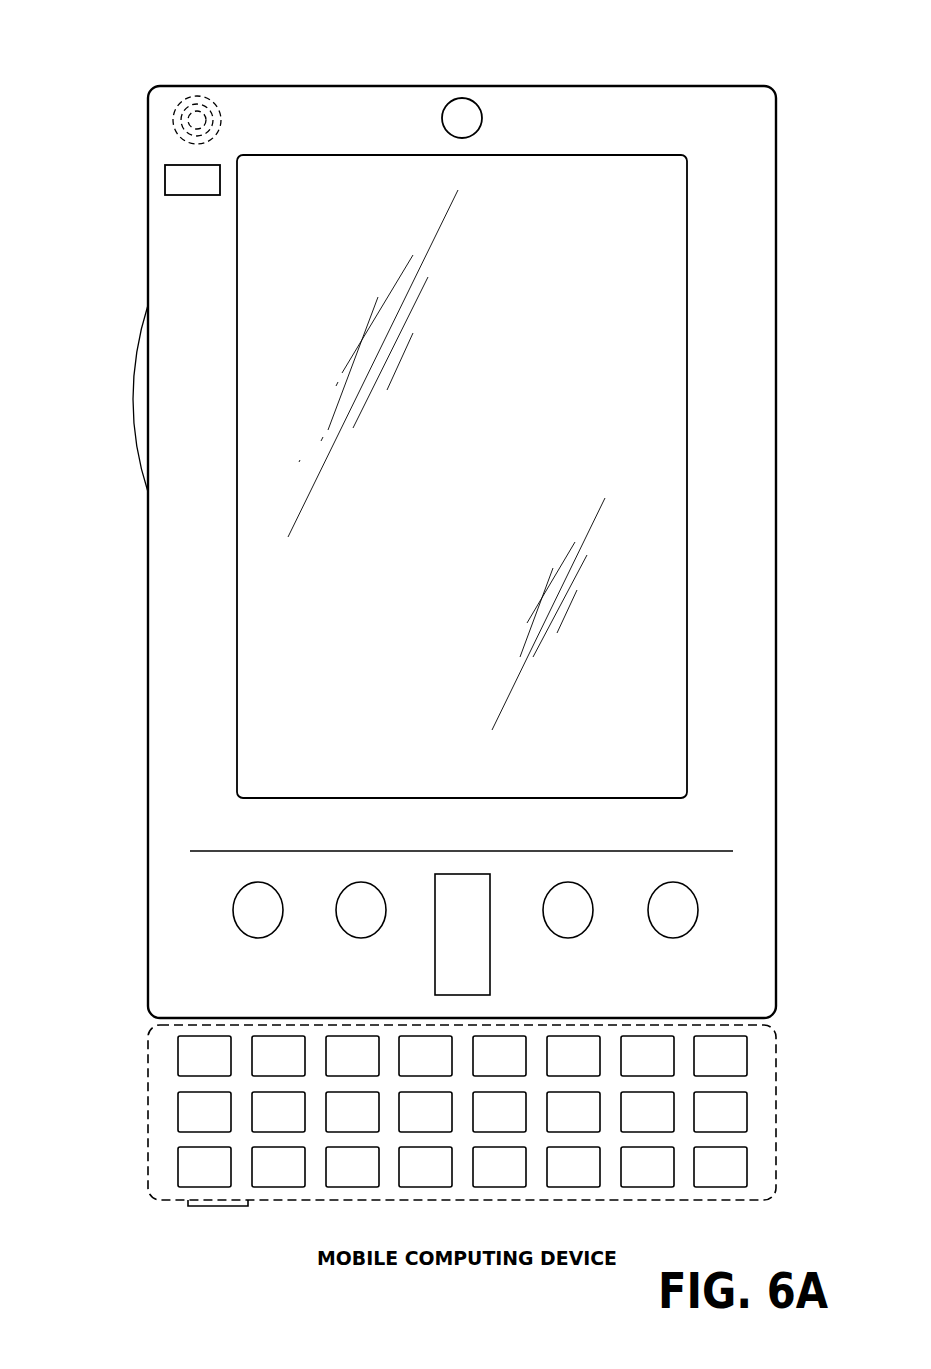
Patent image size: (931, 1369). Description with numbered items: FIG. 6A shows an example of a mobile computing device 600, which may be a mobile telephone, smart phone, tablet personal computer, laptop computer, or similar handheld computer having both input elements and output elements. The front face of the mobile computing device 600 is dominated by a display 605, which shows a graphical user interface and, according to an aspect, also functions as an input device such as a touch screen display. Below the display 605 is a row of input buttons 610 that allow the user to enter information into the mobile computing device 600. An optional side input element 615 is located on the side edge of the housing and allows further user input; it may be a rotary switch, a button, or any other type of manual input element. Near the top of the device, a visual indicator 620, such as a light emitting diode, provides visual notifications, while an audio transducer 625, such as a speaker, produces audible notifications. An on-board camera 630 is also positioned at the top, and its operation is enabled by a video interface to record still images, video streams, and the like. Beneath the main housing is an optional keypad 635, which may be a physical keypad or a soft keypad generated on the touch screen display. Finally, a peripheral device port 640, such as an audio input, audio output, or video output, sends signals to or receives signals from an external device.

The mobile computing device 600 is at (742, 86).
The display 605 is at (258, 642).
The input buttons 610 is at (258, 938).
The side input element 615 is at (128, 398).
The visual indicator 620 is at (165, 182).
The audio transducer 625 is at (167, 122).
The on-board camera 630 is at (462, 98).
The keypad 635 is at (158, 1110).
The peripheral device port 640 is at (198, 1207).